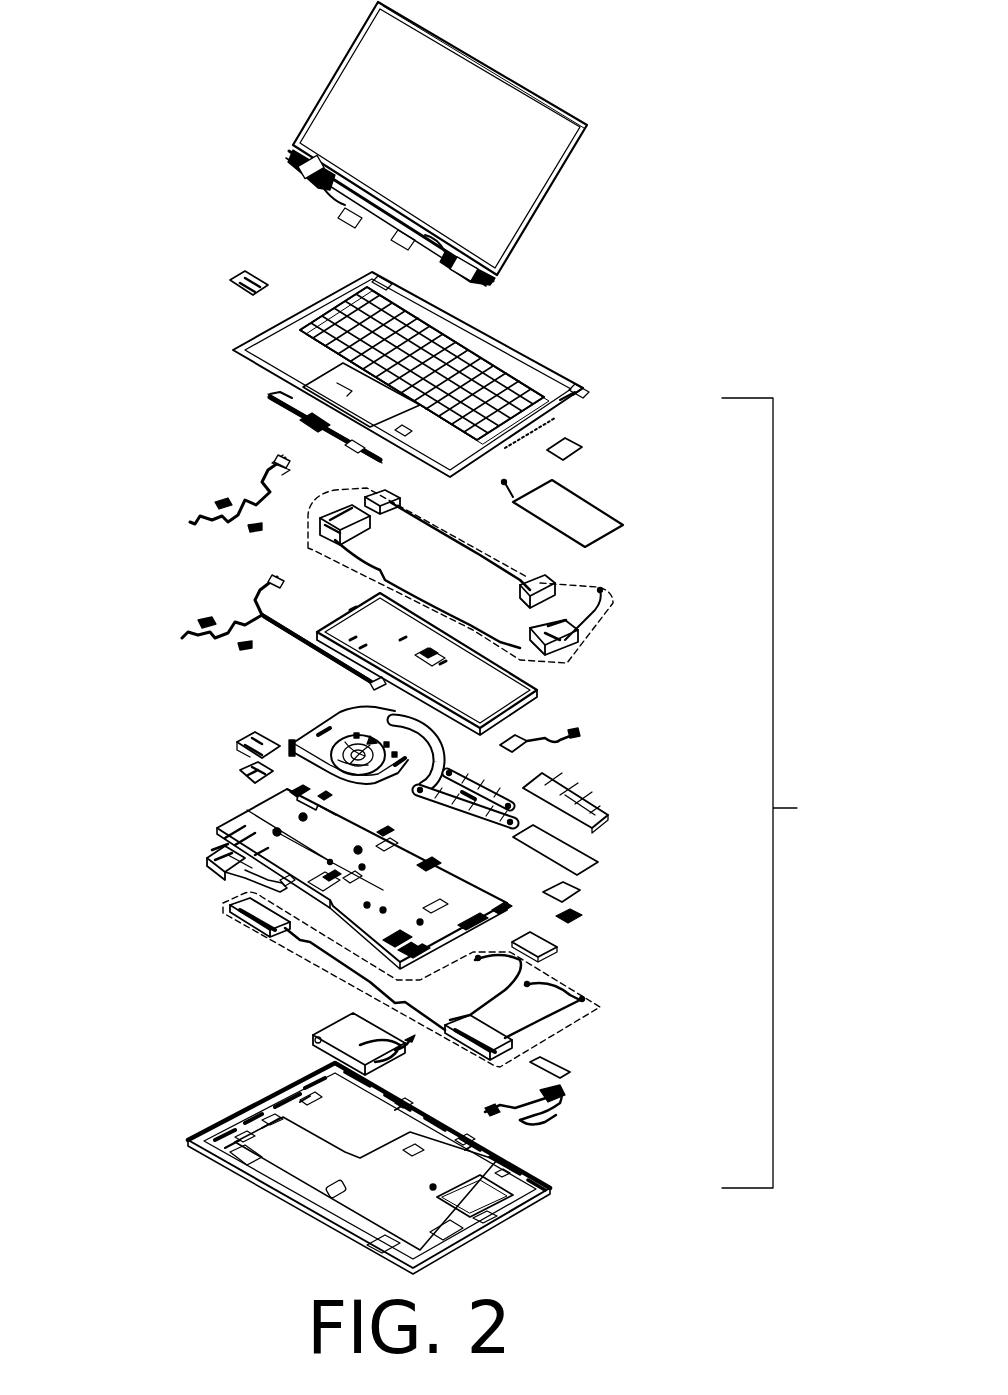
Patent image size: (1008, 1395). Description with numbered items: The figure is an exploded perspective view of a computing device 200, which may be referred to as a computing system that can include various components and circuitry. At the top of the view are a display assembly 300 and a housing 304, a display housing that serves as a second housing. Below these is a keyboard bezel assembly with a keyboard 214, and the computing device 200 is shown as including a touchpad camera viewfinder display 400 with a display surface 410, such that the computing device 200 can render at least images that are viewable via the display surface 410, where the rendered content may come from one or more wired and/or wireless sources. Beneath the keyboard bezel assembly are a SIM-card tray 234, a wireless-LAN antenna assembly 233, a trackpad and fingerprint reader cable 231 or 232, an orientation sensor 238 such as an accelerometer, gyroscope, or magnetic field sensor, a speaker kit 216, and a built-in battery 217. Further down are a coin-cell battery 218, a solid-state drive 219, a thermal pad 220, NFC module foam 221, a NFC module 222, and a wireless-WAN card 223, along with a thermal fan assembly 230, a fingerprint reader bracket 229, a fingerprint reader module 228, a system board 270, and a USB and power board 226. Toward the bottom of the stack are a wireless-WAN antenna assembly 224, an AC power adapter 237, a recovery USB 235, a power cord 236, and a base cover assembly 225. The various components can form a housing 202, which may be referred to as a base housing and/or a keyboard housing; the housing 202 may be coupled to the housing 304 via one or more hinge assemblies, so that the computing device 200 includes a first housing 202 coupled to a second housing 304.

The computing device 200 is at (150, 106).
The housing 202 is at (787, 793).
The keyboard 214 is at (583, 398).
The speaker kit 216 is at (527, 575).
The built-in battery 217 is at (530, 693).
The coin-cell battery 218 is at (535, 745).
The solid-state drive 219 is at (585, 793).
The thermal pad 220 is at (565, 850).
The NFC module foam 221 is at (580, 887).
The NFC module 222 is at (580, 916).
The wireless-WAN card 223 is at (560, 946).
The wireless-WAN antenna assembly 224 is at (590, 1032).
The base cover assembly 225 is at (555, 1188).
The USB and power board 226 is at (208, 865).
The fingerprint reader module 228 is at (243, 773).
The fingerprint reader bracket 229 is at (237, 743).
The thermal fan assembly 230 is at (320, 718).
The trackpad and fingerprint reader cable 231 is at (240, 597).
The trackpad and fingerprint reader cable 232 is at (238, 480).
The wireless-LAN antenna assembly 233 is at (283, 418).
The SIM-card tray 234 is at (228, 283).
The recovery USB 235 is at (575, 1067).
The power cord 236 is at (560, 1107).
The AC power adapter 237 is at (318, 1047).
The orientation sensor 238 is at (582, 442).
The system board 270 is at (250, 810).
The display assembly 300 is at (532, 188).
The housing 304 is at (588, 137).
The touchpad camera viewfinder display 400 is at (580, 502).
The display surface 410 is at (333, 376).